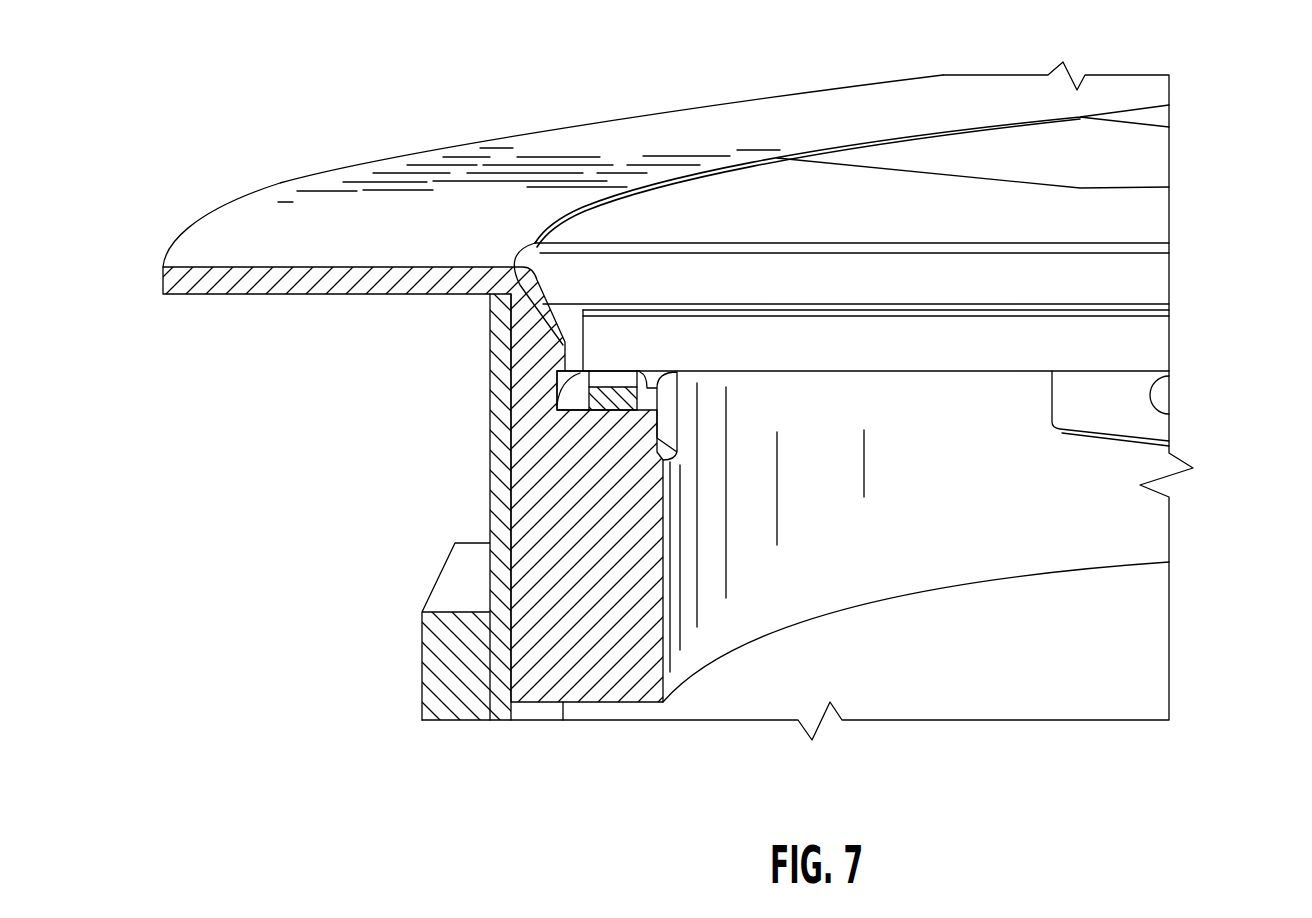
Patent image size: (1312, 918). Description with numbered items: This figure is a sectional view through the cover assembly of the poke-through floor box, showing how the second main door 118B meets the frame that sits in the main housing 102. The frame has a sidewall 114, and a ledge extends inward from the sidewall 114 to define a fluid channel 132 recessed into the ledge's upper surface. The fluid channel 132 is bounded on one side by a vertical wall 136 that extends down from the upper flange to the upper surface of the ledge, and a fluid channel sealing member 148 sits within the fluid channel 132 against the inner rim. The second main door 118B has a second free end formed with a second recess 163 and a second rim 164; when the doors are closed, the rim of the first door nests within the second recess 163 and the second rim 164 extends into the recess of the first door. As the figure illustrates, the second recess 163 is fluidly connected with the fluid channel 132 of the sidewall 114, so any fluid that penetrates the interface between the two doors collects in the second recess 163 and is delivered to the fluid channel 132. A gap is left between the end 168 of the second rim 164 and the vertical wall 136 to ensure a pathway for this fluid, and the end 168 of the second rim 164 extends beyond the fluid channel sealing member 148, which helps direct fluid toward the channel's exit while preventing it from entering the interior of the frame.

The main housing 102 is at (1012, 676).
The sidewall 114 is at (758, 596).
The second main door 118B is at (767, 202).
The second recess 163 is at (1115, 304).
The second rim 164 is at (1083, 313).
The end of the second rim 168 is at (592, 325).
The vertical wall 136 is at (547, 309).
The fluid channel 132 is at (562, 402).
The fluid channel sealing member 148 is at (620, 405).